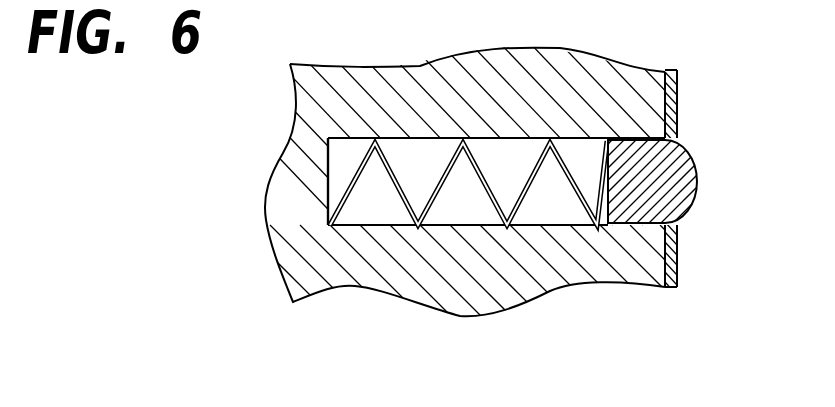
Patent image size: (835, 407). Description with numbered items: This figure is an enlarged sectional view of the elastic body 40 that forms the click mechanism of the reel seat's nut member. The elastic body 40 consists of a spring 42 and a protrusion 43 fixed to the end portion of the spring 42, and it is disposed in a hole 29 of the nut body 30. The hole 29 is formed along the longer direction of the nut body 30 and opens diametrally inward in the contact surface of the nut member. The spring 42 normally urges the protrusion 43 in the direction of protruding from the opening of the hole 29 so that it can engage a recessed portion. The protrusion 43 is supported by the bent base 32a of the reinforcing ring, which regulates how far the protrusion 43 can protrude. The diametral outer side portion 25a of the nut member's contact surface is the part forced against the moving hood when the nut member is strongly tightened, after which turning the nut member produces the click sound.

The nut body 30 is at (447, 88).
The hole 29 is at (505, 145).
The diametral outer side portion of the contact surface 25a is at (678, 99).
The base of the reinforcing ring 32a is at (678, 250).
The elastic body 40 is at (560, 257).
The spring 42 is at (523, 200).
The protrusion 43 is at (633, 203).